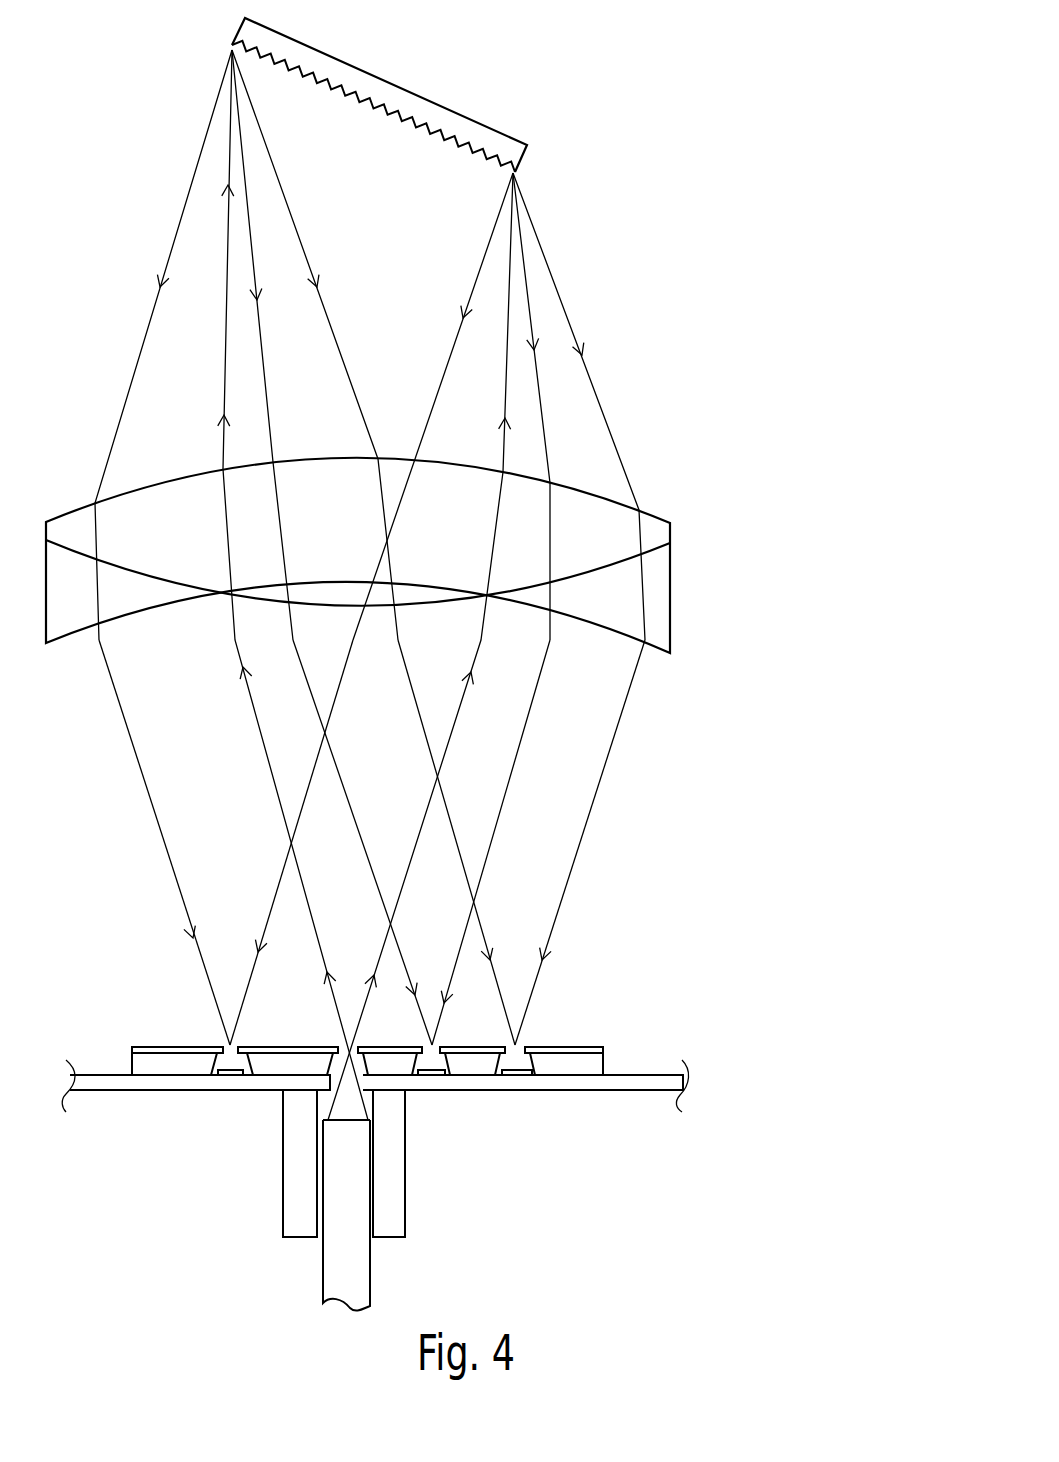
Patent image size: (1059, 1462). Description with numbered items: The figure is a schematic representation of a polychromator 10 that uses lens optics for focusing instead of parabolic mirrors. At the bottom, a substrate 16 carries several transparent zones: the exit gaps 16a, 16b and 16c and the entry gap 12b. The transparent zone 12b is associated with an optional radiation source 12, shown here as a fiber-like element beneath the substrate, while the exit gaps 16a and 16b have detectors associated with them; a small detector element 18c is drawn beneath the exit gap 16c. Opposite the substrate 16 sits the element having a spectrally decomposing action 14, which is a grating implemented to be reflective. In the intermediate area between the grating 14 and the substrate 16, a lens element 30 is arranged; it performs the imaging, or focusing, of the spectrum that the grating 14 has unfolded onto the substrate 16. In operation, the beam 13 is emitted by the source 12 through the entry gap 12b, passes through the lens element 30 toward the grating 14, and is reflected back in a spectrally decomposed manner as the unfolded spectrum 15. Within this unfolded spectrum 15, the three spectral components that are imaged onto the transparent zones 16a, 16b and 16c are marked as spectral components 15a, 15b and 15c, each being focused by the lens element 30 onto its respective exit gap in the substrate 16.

The polychromator 10 is at (883, 20).
The radiation source 12 is at (352, 1280).
The transparent zone (entry gap) 12b is at (355, 1063).
The beam 13 is at (352, 912).
The element having a spectrally decomposing action 14 is at (433, 115).
The unfolded spectrum 15 is at (602, 406).
The spectral component 15a is at (766, 181).
The spectral component 15b is at (513, 325).
The spectral component 15c is at (427, 250).
The substrate 16 is at (406, 1099).
The transparent zone (exit gap) 16a is at (430, 1062).
The transparent zone (exit gap) 16b is at (513, 1062).
The transparent zone (exit gap) 16c is at (217, 1063).
The detector element 18c is at (225, 1077).
The lens 30 is at (672, 598).